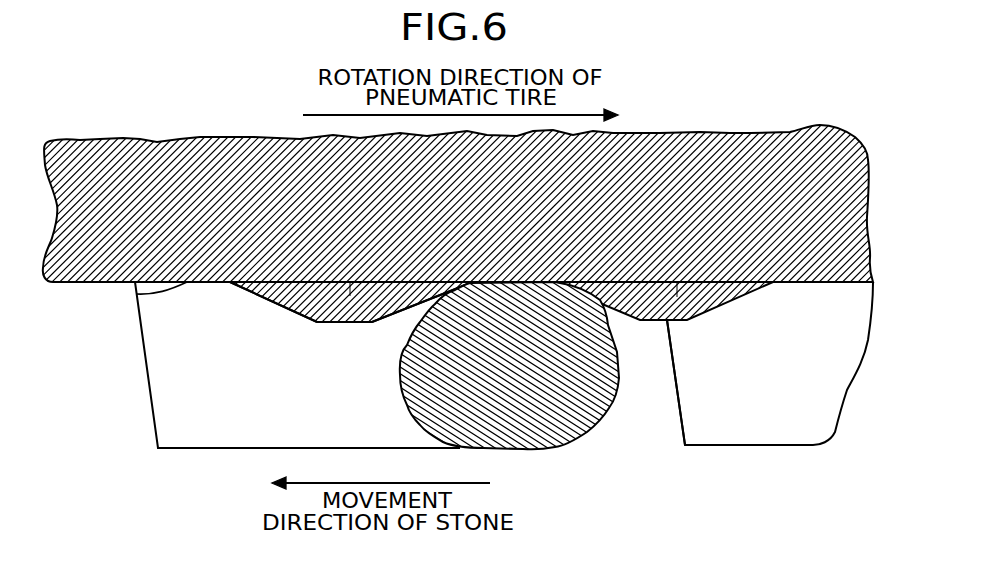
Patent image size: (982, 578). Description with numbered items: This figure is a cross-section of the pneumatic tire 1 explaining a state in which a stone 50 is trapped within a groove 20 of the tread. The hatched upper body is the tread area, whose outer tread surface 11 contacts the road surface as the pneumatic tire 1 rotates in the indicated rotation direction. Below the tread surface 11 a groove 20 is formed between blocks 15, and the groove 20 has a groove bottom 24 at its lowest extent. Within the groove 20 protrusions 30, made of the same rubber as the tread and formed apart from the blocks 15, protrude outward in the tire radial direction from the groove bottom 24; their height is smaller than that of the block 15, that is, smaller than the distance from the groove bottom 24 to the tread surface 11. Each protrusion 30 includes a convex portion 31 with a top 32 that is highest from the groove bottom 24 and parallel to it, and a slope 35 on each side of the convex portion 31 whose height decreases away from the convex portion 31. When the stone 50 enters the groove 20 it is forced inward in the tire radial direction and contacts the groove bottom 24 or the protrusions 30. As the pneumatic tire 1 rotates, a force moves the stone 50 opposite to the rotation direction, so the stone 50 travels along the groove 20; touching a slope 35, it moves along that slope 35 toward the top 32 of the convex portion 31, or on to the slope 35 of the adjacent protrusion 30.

The pneumatic tire 1 is at (157, 167).
The tread surface 11 is at (192, 448).
The block 15 is at (168, 362).
The groove 20 is at (260, 418).
The groove bottom 24 is at (137, 294).
The protrusion 30 is at (350, 290).
The convex portion 31 is at (342, 327).
The top 32 is at (661, 301).
The slope 35 is at (287, 300).
The stone 50 is at (597, 420).